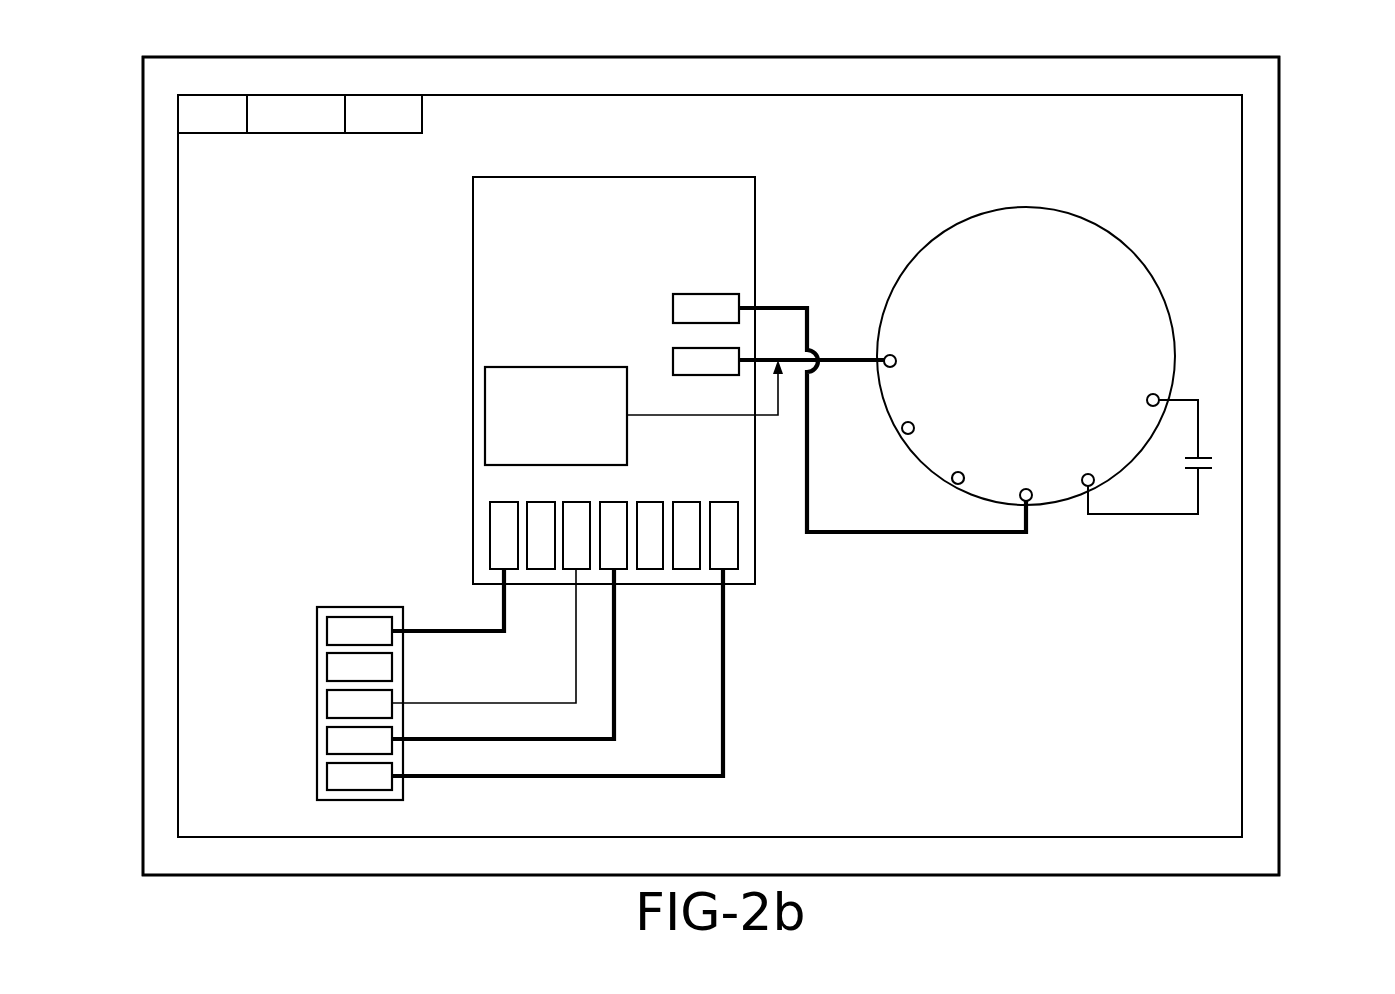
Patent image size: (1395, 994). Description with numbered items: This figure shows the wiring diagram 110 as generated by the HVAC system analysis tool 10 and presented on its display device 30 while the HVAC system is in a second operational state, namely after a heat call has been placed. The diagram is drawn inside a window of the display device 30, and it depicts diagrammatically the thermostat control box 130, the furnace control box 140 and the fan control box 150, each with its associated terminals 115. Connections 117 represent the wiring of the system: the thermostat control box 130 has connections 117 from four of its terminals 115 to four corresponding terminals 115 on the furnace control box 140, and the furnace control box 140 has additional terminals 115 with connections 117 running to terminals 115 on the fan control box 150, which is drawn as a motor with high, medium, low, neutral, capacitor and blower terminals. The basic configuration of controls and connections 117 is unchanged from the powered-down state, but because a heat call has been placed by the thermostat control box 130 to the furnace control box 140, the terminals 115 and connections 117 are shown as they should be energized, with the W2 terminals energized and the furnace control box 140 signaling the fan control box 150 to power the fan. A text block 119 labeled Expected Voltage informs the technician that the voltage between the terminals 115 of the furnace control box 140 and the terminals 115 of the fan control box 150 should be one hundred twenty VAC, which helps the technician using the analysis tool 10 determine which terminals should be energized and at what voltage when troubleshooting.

The HVAC system analysis tool 10 is at (1343, 187).
The display device 30 is at (1257, 325).
The wiring diagram 110 is at (250, 259).
The terminals 115 is at (697, 294).
The connections 117 is at (837, 357).
The text block 119 is at (553, 367).
The thermostat control box 130 is at (345, 606).
The furnace control box 140 is at (548, 177).
The fan control box 150 is at (1083, 255).